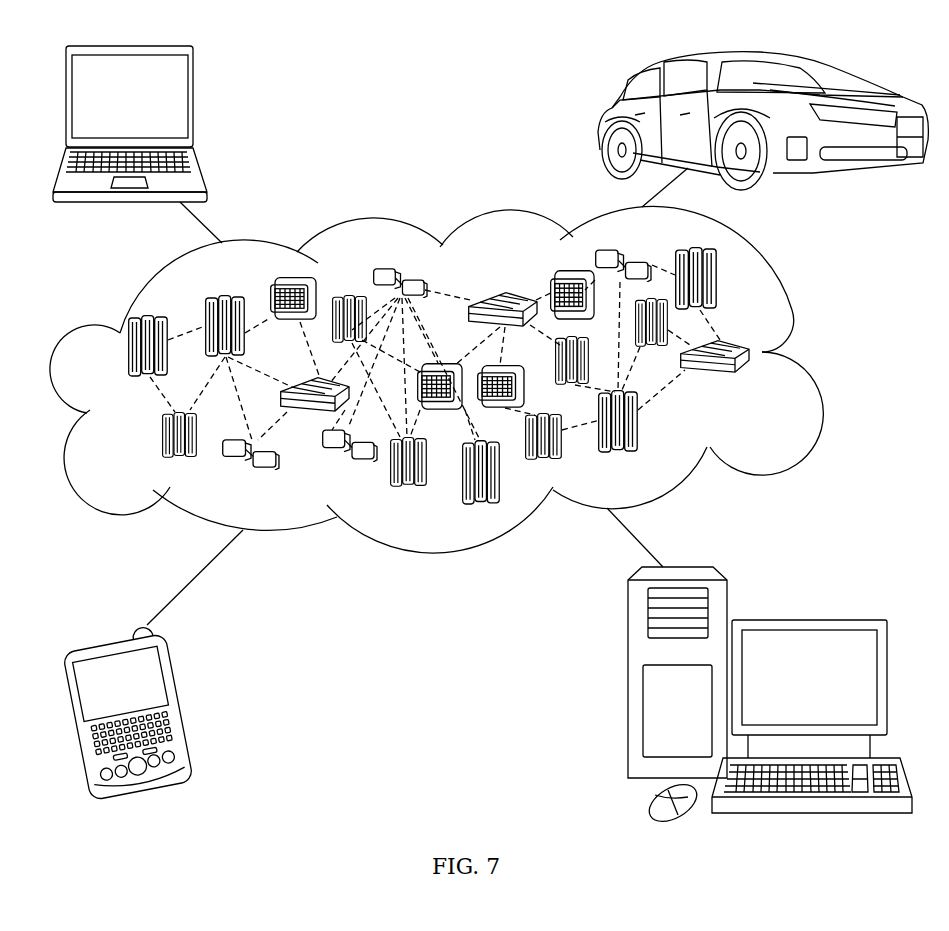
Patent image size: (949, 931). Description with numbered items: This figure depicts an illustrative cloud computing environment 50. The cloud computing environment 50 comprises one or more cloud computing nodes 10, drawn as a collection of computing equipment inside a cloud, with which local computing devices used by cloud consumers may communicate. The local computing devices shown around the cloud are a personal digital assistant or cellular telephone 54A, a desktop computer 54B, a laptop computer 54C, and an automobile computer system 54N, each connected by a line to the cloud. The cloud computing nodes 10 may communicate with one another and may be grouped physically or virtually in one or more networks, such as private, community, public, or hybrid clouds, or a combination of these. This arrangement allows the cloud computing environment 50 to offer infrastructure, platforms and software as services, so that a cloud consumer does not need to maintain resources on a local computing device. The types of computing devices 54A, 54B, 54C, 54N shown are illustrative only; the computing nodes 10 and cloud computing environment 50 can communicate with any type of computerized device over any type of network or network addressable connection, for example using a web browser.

The cloud computing environment 50 is at (803, 357).
The cloud computing node 10 is at (763, 390).
The personal digital assistant or cellular telephone 54A is at (183, 707).
The desktop computer 54B is at (803, 620).
The laptop computer 54C is at (193, 107).
The automobile computer system 54N is at (600, 130).